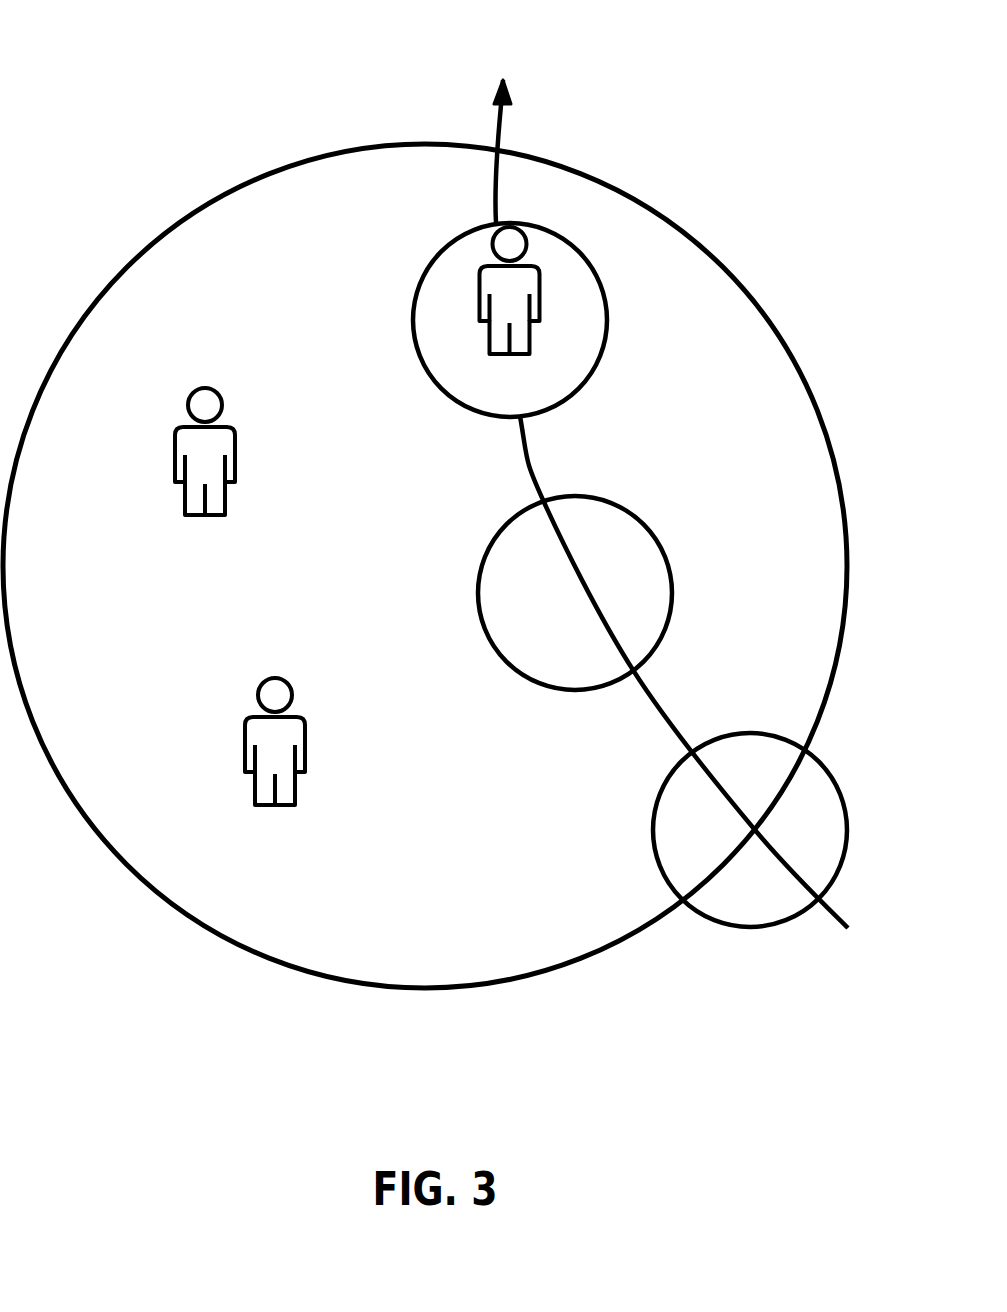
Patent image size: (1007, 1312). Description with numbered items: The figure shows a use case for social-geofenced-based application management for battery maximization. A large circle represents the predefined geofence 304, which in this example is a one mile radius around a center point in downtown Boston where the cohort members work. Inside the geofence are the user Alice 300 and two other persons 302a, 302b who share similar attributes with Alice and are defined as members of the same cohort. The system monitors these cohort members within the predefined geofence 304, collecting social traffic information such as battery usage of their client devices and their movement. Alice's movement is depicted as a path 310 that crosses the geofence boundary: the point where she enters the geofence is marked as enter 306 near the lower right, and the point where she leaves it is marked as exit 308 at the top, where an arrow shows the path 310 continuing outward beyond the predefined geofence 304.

The user (Alice) 300 is at (510, 320).
The person 302a is at (205, 481).
The person 302b is at (275, 771).
The predefined geofence 304 is at (230, 192).
The enter 306 is at (750, 830).
The exit 308 is at (535, 113).
The path 310 is at (697, 534).